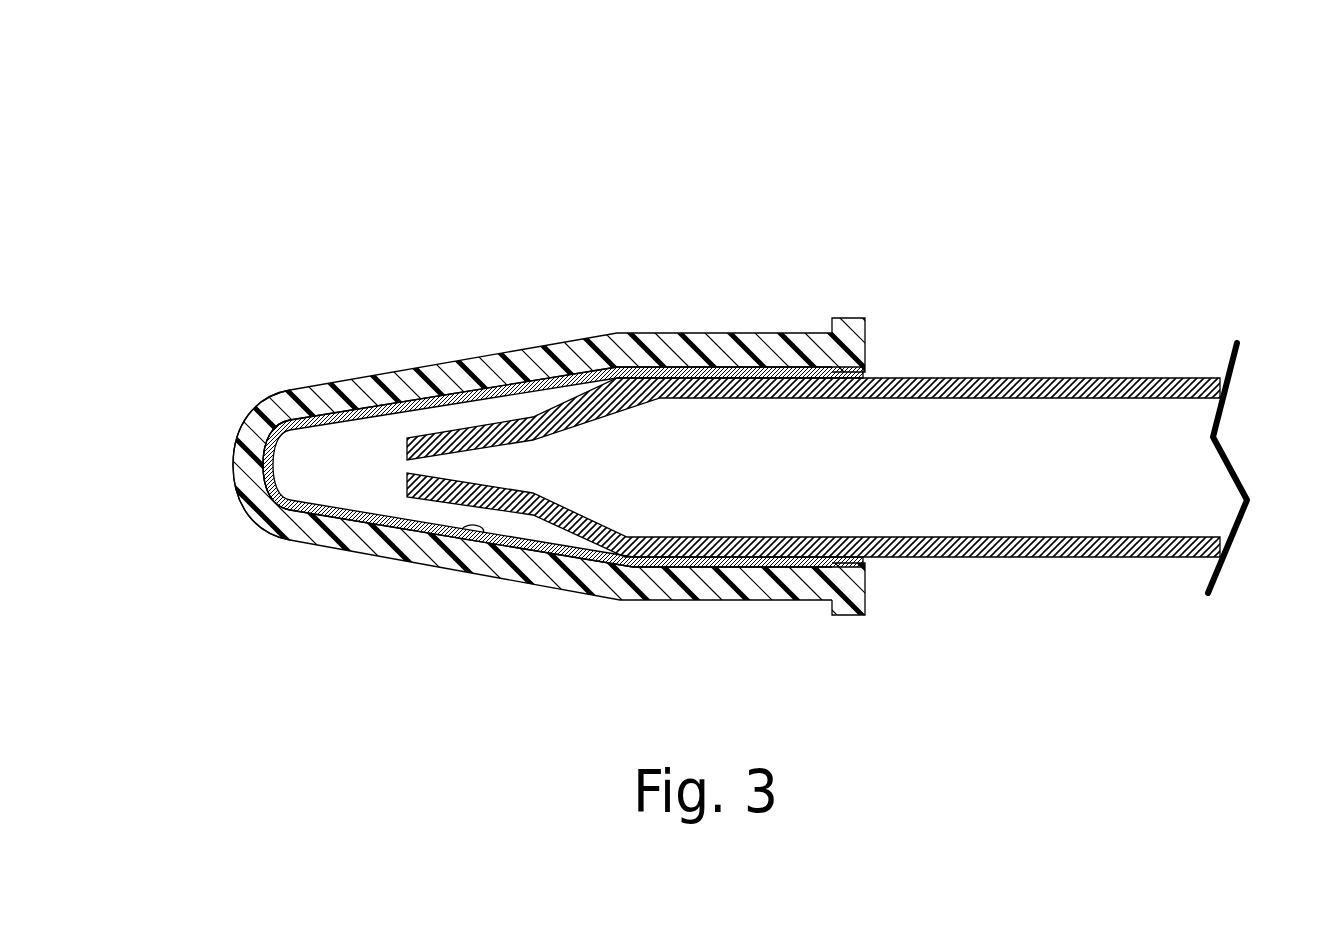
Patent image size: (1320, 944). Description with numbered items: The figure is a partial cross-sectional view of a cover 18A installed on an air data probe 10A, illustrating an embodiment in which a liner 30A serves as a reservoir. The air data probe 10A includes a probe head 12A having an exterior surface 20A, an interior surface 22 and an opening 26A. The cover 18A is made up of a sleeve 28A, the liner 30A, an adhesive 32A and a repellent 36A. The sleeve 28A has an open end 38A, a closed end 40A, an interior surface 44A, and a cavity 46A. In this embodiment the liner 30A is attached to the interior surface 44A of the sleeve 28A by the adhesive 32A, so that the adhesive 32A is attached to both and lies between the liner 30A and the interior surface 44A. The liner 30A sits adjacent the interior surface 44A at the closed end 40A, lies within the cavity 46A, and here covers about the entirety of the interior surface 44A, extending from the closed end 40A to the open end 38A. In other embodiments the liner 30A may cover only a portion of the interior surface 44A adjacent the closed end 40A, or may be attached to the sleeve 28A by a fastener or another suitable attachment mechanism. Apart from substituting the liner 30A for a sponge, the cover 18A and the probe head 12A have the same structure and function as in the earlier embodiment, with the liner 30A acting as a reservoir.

The air data probe 10A is at (1048, 162).
The probe head 12A is at (1134, 338).
The cover 18A is at (580, 293).
The exterior surface 20A is at (1093, 560).
The interior surface 22 is at (1183, 398).
The opening 26A is at (402, 462).
The sleeve 28A is at (675, 587).
The liner 30A is at (357, 527).
The adhesive 32A is at (244, 500).
The repellent 36A is at (473, 392).
The open end 38A is at (865, 578).
The closed end 40A is at (232, 462).
The interior surface 44A is at (483, 543).
The cavity 46A is at (535, 535).